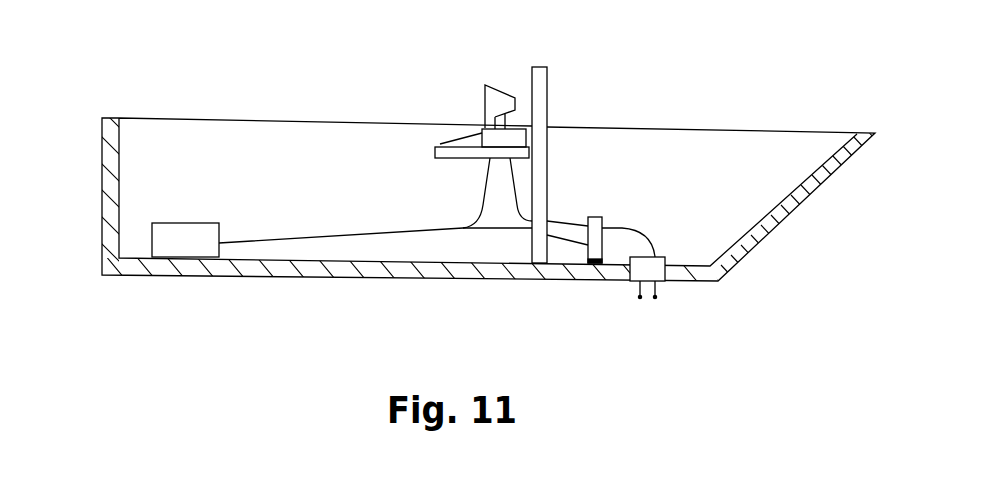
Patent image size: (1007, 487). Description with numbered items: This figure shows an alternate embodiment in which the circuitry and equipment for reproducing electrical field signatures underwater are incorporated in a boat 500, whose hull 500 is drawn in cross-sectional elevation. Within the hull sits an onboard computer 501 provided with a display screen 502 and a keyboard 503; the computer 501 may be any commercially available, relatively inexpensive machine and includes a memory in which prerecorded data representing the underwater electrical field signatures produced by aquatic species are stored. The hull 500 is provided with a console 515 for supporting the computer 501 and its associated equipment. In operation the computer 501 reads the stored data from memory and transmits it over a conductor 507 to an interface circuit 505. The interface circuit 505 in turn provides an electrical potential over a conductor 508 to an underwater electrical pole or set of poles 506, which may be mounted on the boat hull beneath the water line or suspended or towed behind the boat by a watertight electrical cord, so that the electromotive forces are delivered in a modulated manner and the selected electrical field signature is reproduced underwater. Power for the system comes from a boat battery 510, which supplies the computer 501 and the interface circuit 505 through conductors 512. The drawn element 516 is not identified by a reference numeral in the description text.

The boat 500 is at (815, 130).
The onboard computer 501 is at (482, 128).
The display screen 502 is at (500, 89).
The keyboard 503 is at (455, 145).
The interface circuit 505 is at (595, 217).
The underwater electrical pole 506 is at (658, 292).
The conductor 507 is at (560, 220).
The conductor 508 is at (635, 230).
The boat battery 510 is at (178, 223).
The conductors 512 is at (493, 228).
The console 515 is at (533, 68).
The connector housing 516 is at (667, 257).